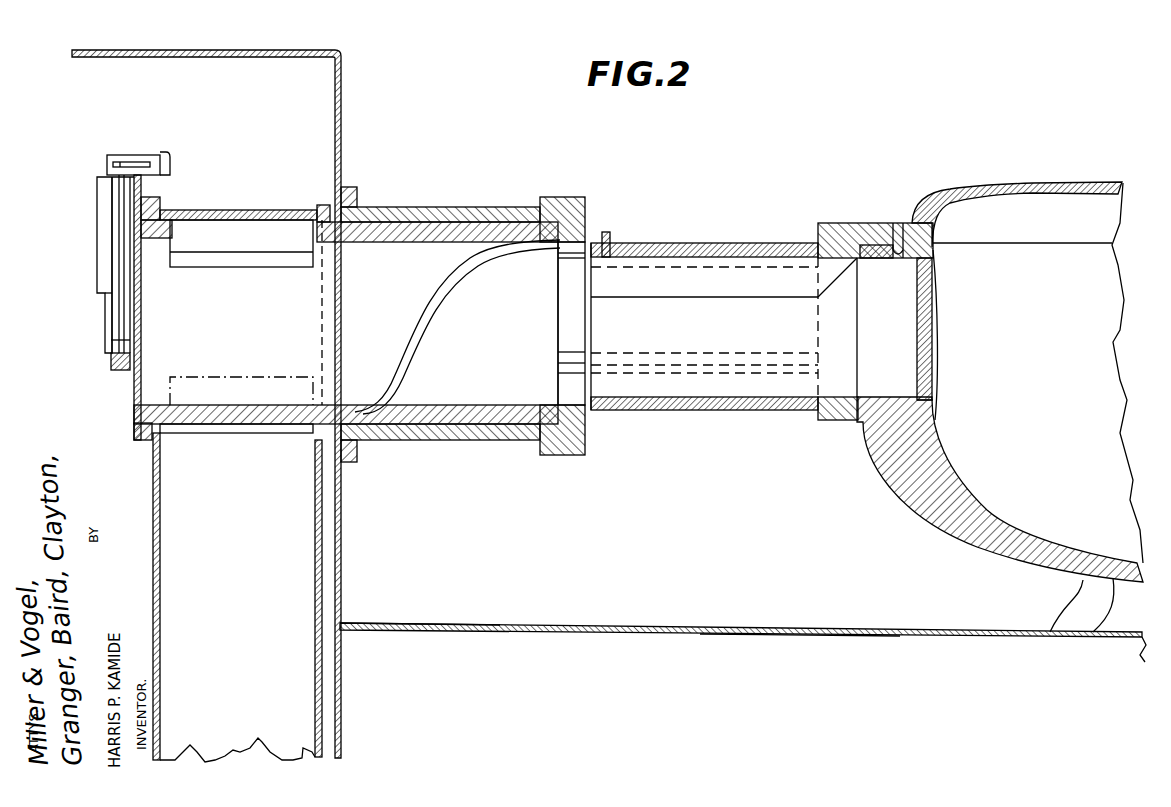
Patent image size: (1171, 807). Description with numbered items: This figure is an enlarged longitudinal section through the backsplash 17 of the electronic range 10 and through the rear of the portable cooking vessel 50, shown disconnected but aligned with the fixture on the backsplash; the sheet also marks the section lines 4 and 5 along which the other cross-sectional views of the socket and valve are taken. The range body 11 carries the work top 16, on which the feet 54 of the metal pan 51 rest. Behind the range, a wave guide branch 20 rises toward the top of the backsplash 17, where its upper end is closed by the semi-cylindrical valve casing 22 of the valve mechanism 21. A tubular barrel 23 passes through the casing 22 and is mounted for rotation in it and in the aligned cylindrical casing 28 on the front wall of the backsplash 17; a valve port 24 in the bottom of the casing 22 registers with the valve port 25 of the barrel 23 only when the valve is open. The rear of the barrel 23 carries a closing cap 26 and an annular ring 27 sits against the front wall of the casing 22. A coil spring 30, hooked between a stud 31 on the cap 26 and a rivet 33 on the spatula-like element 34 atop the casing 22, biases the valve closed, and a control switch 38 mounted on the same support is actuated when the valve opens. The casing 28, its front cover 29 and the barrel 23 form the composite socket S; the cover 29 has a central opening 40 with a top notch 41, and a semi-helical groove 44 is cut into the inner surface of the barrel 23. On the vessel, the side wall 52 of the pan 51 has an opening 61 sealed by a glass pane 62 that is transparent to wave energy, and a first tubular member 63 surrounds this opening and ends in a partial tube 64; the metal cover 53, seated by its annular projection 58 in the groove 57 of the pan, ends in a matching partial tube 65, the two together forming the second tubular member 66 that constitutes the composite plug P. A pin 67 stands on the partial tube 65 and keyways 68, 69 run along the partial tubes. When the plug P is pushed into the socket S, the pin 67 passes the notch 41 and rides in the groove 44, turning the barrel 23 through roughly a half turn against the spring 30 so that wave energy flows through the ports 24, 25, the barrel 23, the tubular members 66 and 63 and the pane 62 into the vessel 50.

The electronic range 10 is at (712, 630).
The body 11 is at (470, 626).
The work top 16 is at (855, 632).
The backsplash 17 is at (346, 56).
The wave guide branch 20 is at (160, 574).
The valve mechanism 21 is at (132, 381).
The valve casing 22 is at (255, 212).
The valve element (barrel) 23 is at (365, 242).
The valve port 24 is at (178, 433).
The valve port 25 is at (235, 262).
The closing cap 26 is at (134, 430).
The annular ring 27 is at (330, 205).
The casing 28 is at (405, 207).
The cover 29 is at (548, 197).
The coil spring 30 is at (130, 312).
The stud 31 is at (110, 336).
The rivet 33 is at (117, 153).
The spatula-like element 34 is at (170, 150).
The control switch 38 is at (100, 258).
The opening 40 is at (566, 392).
The notch 41 is at (588, 238).
The semi-helical groove (thread) 44 is at (425, 355).
The portable cooking vessel 50 is at (878, 203).
The metal pan 51 is at (900, 480).
The side wall 52 is at (1104, 268).
The metal cover 53 is at (1028, 185).
The feet 54 is at (1075, 598).
The annular groove 57 is at (903, 260).
The annular projection 58 is at (895, 225).
The opening 61 is at (932, 398).
The pane 62 is at (934, 332).
The first tubular member 63 is at (876, 259).
The partial tube 64 is at (715, 410).
The partial tube 65 is at (688, 243).
The second tubular member 66 is at (716, 335).
The upstanding pin 67 is at (612, 237).
The slot (keyway) 68 is at (606, 355).
The slot (keyway) 69 is at (660, 264).
The section line 4- 4 is at (636, 207).
The section line 5- 5 is at (283, 178).
The composite socket S is at (470, 188).
The composite plug P is at (760, 222).